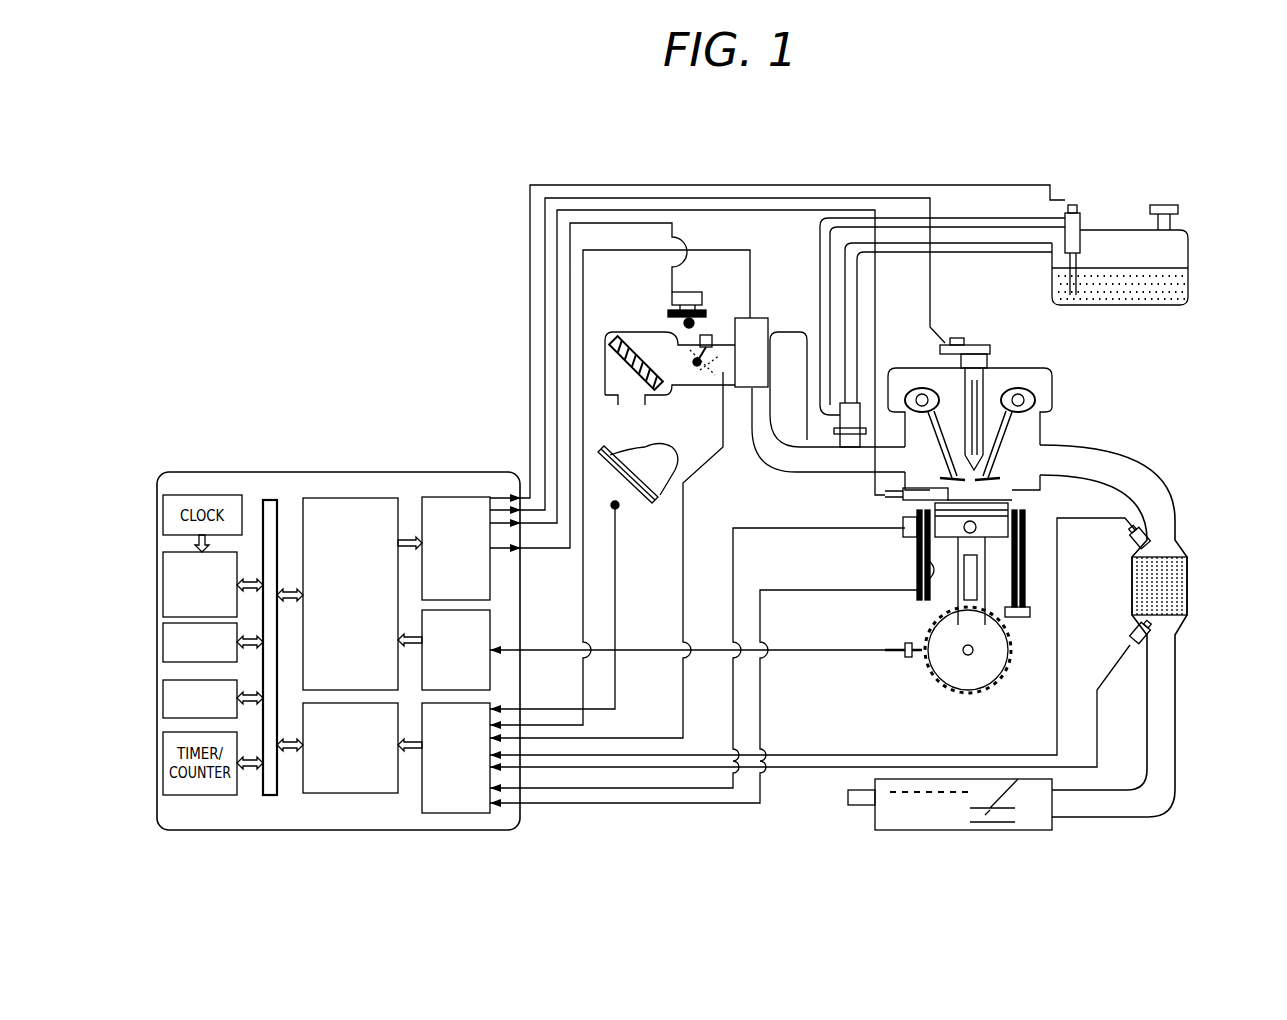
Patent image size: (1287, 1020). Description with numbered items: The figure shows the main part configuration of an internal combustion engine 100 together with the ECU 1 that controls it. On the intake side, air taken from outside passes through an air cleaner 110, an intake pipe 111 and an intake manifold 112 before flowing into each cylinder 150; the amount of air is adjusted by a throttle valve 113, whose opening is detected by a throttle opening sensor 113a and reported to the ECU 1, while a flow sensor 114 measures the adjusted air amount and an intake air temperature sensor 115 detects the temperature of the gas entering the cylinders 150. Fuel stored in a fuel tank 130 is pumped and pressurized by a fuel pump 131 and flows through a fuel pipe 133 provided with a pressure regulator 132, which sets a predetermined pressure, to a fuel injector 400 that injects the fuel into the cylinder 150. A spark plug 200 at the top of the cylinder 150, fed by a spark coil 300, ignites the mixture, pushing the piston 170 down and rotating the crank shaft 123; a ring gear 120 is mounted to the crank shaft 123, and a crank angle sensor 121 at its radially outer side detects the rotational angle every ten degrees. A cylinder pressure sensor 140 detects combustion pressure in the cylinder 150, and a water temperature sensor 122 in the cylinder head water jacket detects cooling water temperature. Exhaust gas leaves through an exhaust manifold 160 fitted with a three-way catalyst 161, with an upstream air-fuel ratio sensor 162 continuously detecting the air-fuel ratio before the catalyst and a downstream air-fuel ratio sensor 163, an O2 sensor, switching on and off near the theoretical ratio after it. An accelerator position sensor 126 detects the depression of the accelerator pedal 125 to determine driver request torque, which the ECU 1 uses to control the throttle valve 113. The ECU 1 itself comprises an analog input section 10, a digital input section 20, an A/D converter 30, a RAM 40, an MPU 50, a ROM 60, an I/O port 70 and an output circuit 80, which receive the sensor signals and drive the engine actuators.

The ECU 1 is at (482, 472).
The analog input section 10 is at (455, 813).
The digital input section 20 is at (520, 622).
The A/D converter 30 is at (303, 785).
The RAM 40 is at (158, 695).
The MPU 50 is at (158, 572).
The ROM 60 is at (158, 640).
The I/O port 70 is at (345, 498).
The output circuit 80 is at (445, 497).
The internal combustion engine 100 is at (888, 128).
The air cleaner 110 is at (628, 336).
The intake pipe 111 is at (795, 332).
The intake manifold 112 is at (752, 455).
The throttle valve 113 is at (700, 372).
The throttle opening sensor 113a is at (706, 325).
The flow sensor 114 is at (758, 318).
The intake air temperature sensor 115 is at (1018, 628).
The ring gear 120 is at (940, 665).
The crank angle sensor 121 is at (885, 650).
The water temperature sensor 122 is at (915, 592).
The crank shaft 123 is at (965, 655).
The accelerator pedal 125 is at (603, 455).
The accelerator position sensor 126 is at (619, 510).
The fuel tank 130 is at (1190, 240).
The fuel pump 131 is at (1080, 213).
The pressure regulator 132 is at (842, 447).
The fuel pipe 133 is at (990, 218).
The cylinder pressure sensor 140 is at (903, 530).
The cylinder 150 is at (918, 572).
The exhaust manifold 160 is at (1155, 463).
The three-way catalyst 161 is at (1130, 590).
The upstream air-fuel ratio sensor 162 is at (1130, 540).
The downstream air-fuel ratio sensor 163 is at (1130, 640).
The piston 170 is at (1000, 526).
The spark plug 200 is at (1046, 440).
The spark coil 300 is at (990, 349).
The fuel injector 400 is at (890, 500).